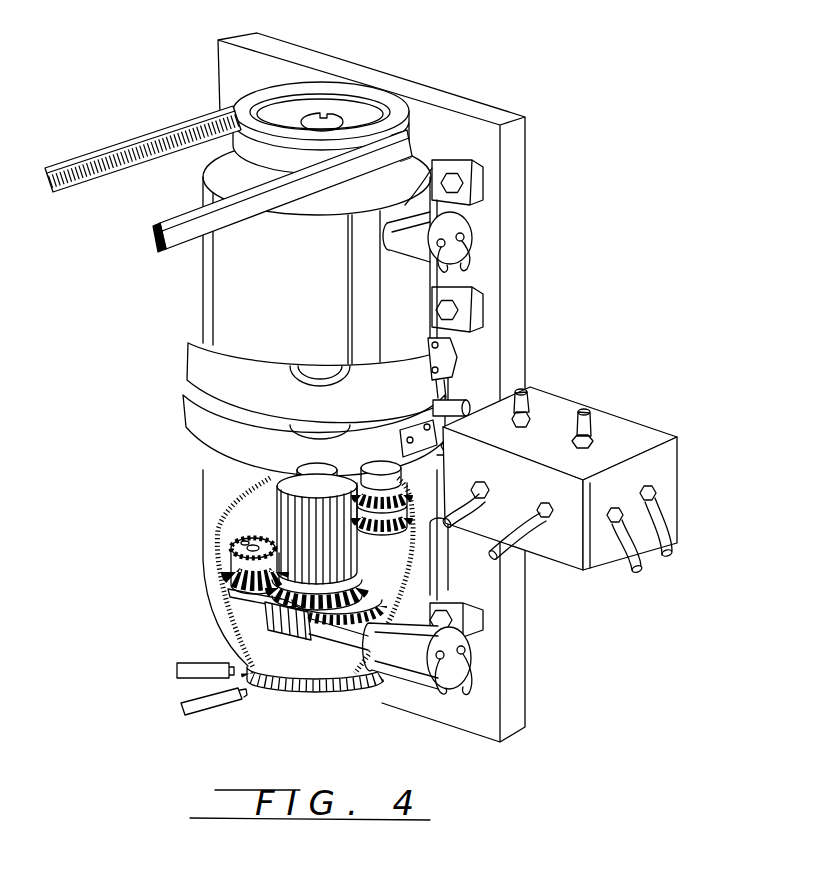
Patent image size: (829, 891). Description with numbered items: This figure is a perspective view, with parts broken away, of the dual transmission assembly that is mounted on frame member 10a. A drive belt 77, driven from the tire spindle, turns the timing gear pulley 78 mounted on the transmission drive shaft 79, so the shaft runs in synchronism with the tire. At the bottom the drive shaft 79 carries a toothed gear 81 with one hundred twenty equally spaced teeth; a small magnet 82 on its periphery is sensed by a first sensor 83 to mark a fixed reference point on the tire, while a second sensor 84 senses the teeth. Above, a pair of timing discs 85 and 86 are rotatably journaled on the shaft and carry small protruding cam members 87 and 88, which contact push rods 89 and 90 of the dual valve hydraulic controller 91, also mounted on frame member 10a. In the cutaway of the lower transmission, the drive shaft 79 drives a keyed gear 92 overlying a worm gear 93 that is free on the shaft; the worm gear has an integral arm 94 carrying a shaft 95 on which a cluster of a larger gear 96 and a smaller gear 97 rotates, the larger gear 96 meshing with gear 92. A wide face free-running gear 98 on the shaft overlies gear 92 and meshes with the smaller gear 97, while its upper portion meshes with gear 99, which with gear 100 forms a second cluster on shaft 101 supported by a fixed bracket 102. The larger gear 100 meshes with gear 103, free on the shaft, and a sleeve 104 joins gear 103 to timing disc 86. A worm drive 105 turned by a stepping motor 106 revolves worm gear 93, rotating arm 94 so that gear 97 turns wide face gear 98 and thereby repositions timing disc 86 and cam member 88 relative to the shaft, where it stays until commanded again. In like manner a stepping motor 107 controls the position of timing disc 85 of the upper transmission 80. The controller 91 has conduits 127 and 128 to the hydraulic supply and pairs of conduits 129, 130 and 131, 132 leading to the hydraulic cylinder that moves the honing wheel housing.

The frame member 10a is at (498, 117).
The drive belt 77 is at (113, 146).
The timing gear pulley 78 is at (393, 104).
The drive shaft 79 is at (316, 118).
The transmission 80 is at (340, 296).
The toothed gear 81 is at (204, 518).
The magnet 82 is at (253, 684).
The first sensor 83 is at (200, 713).
The second sensor 84 is at (197, 663).
The timing disc 85 is at (188, 352).
The timing disc 86 is at (183, 416).
The cam member 87 is at (453, 355).
The cam member 88 is at (399, 413).
The push rod 89 is at (453, 403).
The push rod 90 is at (445, 444).
The dual valve hydraulic controller 91 is at (675, 436).
The keyed gear 92 is at (358, 580).
The worm gear 93 is at (352, 609).
The arm 94 is at (248, 596).
The shaft 95 is at (243, 545).
The larger gear 96 is at (233, 570).
The smaller gear 97 is at (233, 551).
The wide face free-running gear 98 is at (358, 547).
The gear 99 is at (426, 556).
The gear 100 is at (418, 494).
The shaft 101 is at (420, 483).
The fixed bracket 102 is at (375, 473).
The gear 103 is at (272, 480).
The sleeve 104 is at (313, 470).
The worm drive 105 is at (282, 632).
The stepping motor 106 is at (410, 688).
The stepping motor 107 is at (467, 231).
The conduit 127 is at (630, 569).
The conduit 128 is at (672, 545).
The conduit 129 is at (530, 394).
The conduit 130 is at (598, 415).
The conduit 131 is at (460, 508).
The conduit 132 is at (518, 534).